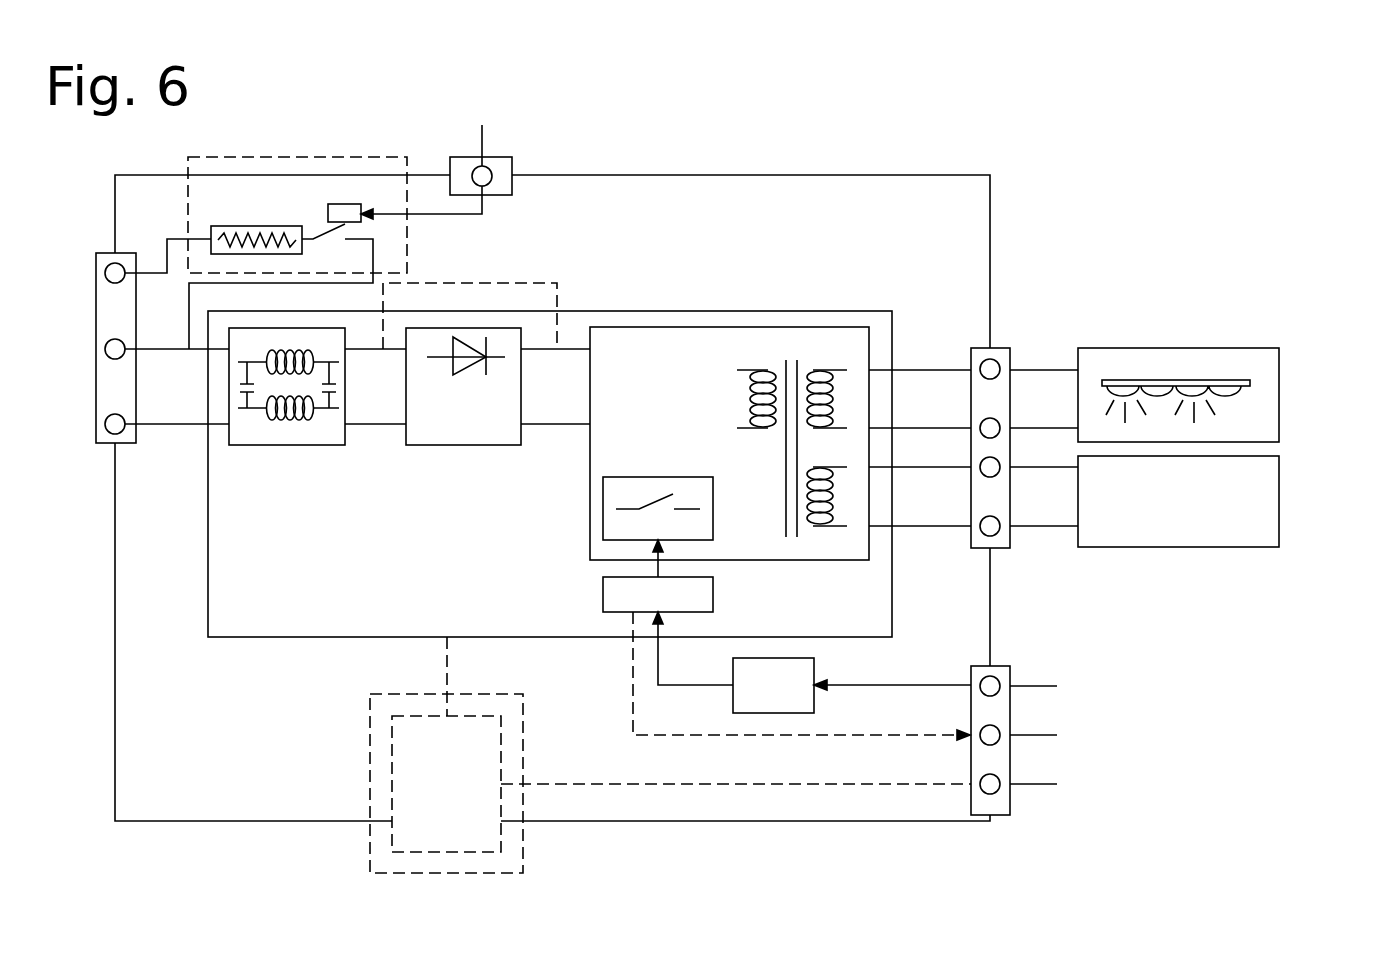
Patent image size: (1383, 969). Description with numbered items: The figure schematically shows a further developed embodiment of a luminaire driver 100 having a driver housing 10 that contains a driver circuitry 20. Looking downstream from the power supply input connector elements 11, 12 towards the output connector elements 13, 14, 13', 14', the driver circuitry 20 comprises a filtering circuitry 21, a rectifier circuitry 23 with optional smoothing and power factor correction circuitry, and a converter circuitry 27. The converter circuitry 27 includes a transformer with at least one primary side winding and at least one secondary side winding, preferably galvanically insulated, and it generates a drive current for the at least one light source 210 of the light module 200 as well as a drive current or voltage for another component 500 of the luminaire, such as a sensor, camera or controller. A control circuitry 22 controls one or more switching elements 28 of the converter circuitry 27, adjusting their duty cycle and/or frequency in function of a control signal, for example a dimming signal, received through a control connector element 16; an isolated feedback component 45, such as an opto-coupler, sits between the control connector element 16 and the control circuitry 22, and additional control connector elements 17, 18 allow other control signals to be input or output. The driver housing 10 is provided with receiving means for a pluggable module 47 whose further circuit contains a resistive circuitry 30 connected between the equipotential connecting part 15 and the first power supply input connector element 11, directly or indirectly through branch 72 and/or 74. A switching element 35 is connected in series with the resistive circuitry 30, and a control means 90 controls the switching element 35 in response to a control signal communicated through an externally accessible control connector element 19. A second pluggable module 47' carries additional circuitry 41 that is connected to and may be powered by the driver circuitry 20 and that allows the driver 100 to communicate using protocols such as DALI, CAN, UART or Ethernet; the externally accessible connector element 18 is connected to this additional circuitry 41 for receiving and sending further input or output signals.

The driver housing 10 is at (802, 175).
The first power supply input connector element 11 is at (110, 349).
The power supply input connector element 12 is at (110, 424).
The output connector element 13 is at (1010, 341).
The output connector element 14 is at (1016, 414).
The output connector element 13' is at (1020, 481).
The output connector element 14' is at (1020, 547).
The equipotential connecting part 15 is at (112, 277).
The control connector element 16 is at (995, 688).
The additional control connector element 17 is at (995, 735).
The control input and/or output connector element 18 is at (995, 788).
The control connector element 19 is at (486, 175).
The driver circuitry 20 is at (745, 307).
The filtering circuitry 21 is at (283, 445).
The control circuitry 22 is at (603, 595).
The rectifier circuitry 23 is at (463, 445).
The converter circuitry 27 is at (800, 560).
The switching element 28 is at (653, 477).
The resistive circuitry 30 is at (244, 226).
The switching element 35 is at (334, 240).
The additional circuitry 41 is at (392, 730).
The isolated feedback component 45 is at (814, 672).
The pluggable module 47 is at (297, 190).
The second pluggable module 47' is at (483, 793).
The branch 72 is at (366, 349).
The branch 74 is at (546, 349).
The control means 90 is at (345, 205).
The driver 100 is at (758, 829).
The light module 200 is at (1170, 348).
The light source 210 is at (1232, 388).
The other component 500 is at (1279, 503).